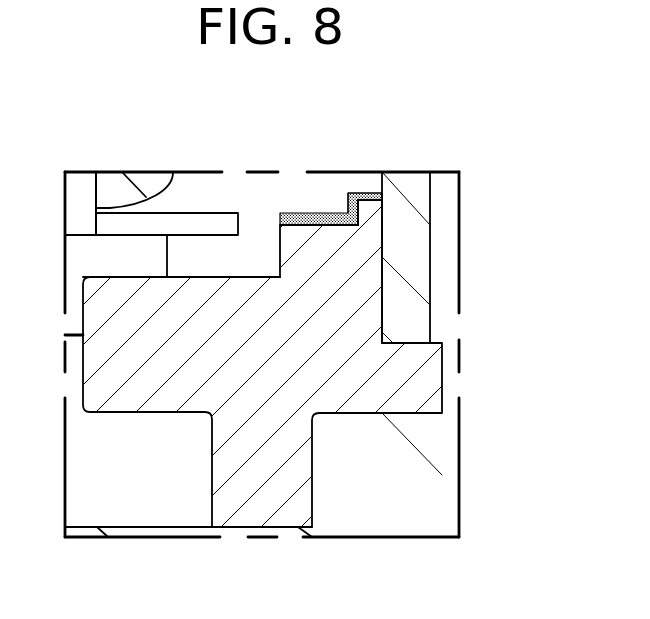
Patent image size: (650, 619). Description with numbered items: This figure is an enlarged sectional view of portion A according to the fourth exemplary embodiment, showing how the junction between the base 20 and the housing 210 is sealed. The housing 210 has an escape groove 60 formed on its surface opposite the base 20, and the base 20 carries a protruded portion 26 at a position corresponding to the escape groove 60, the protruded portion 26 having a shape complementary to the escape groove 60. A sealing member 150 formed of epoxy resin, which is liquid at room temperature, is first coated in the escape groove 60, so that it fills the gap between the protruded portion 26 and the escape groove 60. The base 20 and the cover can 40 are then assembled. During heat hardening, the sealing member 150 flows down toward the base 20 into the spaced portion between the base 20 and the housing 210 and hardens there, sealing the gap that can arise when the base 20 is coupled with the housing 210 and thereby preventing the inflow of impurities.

The portion A is at (80, 172).
The housing 210 is at (232, 185).
The sealing member 150 is at (307, 213).
The escape groove 60 is at (365, 193).
The cover can 40 is at (403, 188).
The protruded portion 26 is at (368, 212).
The base 20 is at (385, 397).